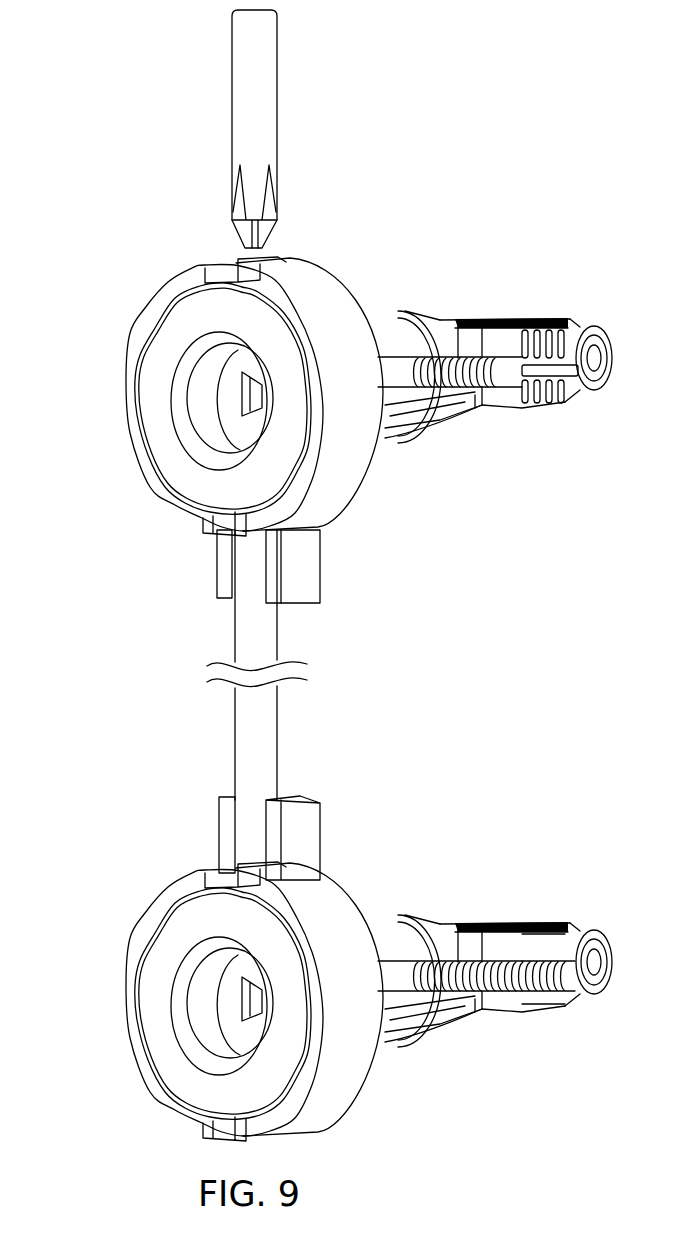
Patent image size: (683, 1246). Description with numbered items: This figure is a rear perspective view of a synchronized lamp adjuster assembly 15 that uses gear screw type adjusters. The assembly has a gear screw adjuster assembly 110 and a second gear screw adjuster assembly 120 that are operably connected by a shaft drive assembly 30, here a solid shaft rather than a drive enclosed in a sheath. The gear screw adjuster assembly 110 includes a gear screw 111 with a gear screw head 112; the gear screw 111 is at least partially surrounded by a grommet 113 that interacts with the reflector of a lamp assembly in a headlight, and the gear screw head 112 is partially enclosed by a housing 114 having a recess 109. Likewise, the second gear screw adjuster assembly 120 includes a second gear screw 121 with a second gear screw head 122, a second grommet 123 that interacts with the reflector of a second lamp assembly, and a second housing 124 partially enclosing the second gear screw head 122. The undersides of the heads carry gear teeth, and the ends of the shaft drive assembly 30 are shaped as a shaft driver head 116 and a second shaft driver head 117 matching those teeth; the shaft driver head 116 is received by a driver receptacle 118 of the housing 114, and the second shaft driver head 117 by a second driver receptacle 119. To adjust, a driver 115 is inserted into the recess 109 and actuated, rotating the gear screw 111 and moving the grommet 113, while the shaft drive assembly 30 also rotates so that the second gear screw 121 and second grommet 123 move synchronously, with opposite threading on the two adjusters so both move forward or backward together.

The synchronized lamp adjuster assembly 15 is at (578, 665).
The shaft drive assembly 30 is at (283, 735).
The recess 109 is at (250, 265).
The gear screw adjuster assembly 110 is at (205, 373).
The gear screw 111 is at (467, 370).
The gear screw head 112 is at (158, 437).
The grommet 113 is at (576, 330).
The housing 114 is at (313, 312).
The driver 115 is at (277, 115).
The shaft driver head 116 is at (232, 540).
The second shaft driver head 117 is at (235, 863).
The driver receptacle 118 is at (303, 582).
The second driver receptacle 119 is at (312, 842).
The second gear screw adjuster assembly 120 is at (221, 997).
The second gear screw 121 is at (593, 990).
The second gear screw head 122 is at (148, 995).
The second grommet 123 is at (565, 935).
The second housing 124 is at (333, 913).